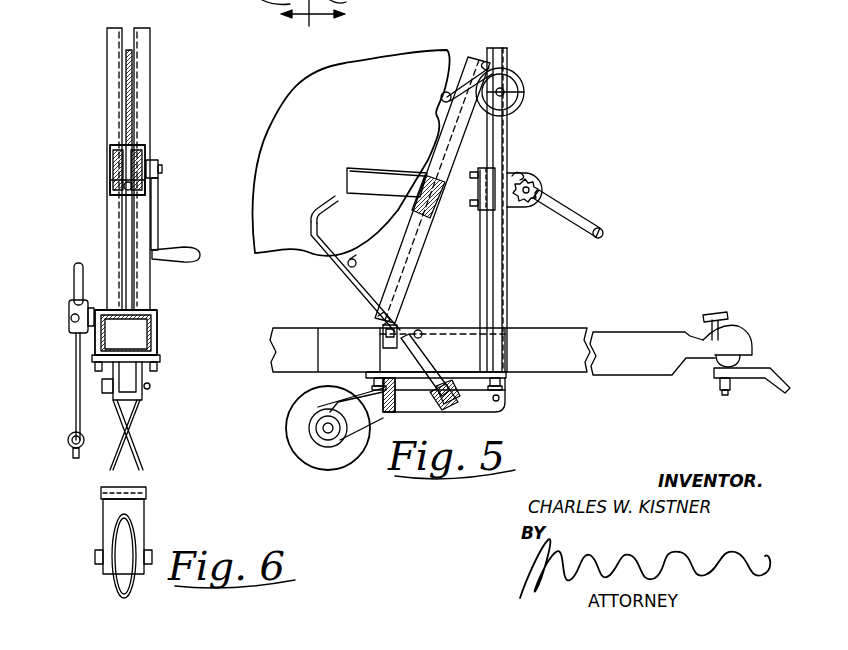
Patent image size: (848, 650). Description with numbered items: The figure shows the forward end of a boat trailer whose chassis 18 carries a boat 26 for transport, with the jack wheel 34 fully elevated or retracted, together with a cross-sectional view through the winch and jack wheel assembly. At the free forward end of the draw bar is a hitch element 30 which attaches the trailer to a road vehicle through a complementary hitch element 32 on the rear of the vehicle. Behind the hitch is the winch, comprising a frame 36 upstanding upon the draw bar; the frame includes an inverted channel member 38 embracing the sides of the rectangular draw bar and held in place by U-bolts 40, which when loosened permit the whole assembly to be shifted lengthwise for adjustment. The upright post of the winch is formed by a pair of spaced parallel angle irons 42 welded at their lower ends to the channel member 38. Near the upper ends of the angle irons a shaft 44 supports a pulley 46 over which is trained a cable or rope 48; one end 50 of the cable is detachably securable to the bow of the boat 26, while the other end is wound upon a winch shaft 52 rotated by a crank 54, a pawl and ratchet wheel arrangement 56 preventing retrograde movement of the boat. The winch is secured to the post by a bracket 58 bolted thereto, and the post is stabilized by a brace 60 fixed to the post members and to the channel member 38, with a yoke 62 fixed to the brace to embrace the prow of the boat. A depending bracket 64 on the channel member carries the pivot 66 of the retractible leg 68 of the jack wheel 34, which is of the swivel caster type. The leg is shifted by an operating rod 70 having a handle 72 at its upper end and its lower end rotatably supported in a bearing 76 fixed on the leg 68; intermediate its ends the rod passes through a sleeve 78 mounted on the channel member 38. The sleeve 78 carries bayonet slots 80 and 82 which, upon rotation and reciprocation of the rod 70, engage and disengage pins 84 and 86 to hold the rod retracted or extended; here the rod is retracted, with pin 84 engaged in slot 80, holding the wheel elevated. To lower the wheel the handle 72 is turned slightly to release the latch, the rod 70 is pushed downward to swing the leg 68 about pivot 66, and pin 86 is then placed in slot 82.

In FIG. 6, the chassis 18 is at (148, 337).
In FIG. 5, the chassis 18 is at (275, 358).
In FIG. 5, the boat 26 is at (406, 70).
In FIG. 5, the hitch element 30 is at (735, 335).
In FIG. 5, the complementary hitch element 32 is at (752, 378).
In FIG. 6, the jack wheel 34 is at (118, 568).
In FIG. 5, the jack wheel 34 is at (287, 434).
In FIG. 6, the frame 36 is at (107, 236).
In FIG. 5, the frame 36 is at (508, 292).
In FIG. 6, the inverted channel member 38 is at (157, 315).
In FIG. 5, the inverted channel member 38 is at (454, 335).
In FIG. 6, the U-bolts 40 is at (160, 352).
In FIG. 5, the U-bolts 40 is at (372, 376).
In FIG. 6, the angle irons 42 is at (112, 208).
In FIG. 5, the angle irons 42 is at (492, 258).
In FIG. 5, the shaft 44 is at (505, 93).
In FIG. 6, the pulley 46 is at (133, 68).
In FIG. 5, the pulley 46 is at (520, 77).
In FIG. 6, the cable or rope 48 is at (128, 112).
In FIG. 5, the cable or rope 48 is at (510, 128).
In FIG. 5, the end of cable 50 is at (484, 64).
In FIG. 6, the winch shaft 52 is at (163, 168).
In FIG. 5, the winch shaft 52 is at (545, 190).
In FIG. 6, the crank 54 is at (160, 243).
In FIG. 5, the crank 54 is at (598, 226).
In FIG. 6, the pawl and ratchet wheel arrangement 56 is at (108, 165).
In FIG. 5, the pawl and ratchet wheel arrangement 56 is at (535, 175).
In FIG. 5, the bracket 58 is at (478, 192).
In FIG. 5, the brace 60 is at (415, 250).
In FIG. 5, the yoke 62 is at (370, 176).
In FIG. 6, the depending bracket 64 is at (145, 373).
In FIG. 5, the depending bracket 64 is at (508, 390).
In FIG. 6, the pivot 66 is at (150, 390).
In FIG. 5, the pivot 66 is at (496, 402).
In FIG. 6, the retractible leg 68 is at (138, 462).
In FIG. 5, the retractible leg 68 is at (410, 395).
In FIG. 6, the operating rod 70 is at (76, 381).
In FIG. 5, the operating rod 70 is at (352, 293).
In FIG. 6, the handle 72 is at (84, 285).
In FIG. 5, the handle 72 is at (330, 200).
In FIG. 6, the bearing 76 is at (68, 440).
In FIG. 5, the bearing 76 is at (440, 400).
In FIG. 6, the sleeve 78 is at (69, 305).
In FIG. 5, the sleeve 78 is at (382, 345).
In FIG. 6, the bayonet slot 80 is at (72, 318).
In FIG. 5, the bayonet slot 80 is at (418, 350).
In FIG. 5, the bayonet slot 82 is at (378, 318).
In FIG. 5, the pin 84 is at (419, 330).
In FIG. 5, the pin 86 is at (356, 262).